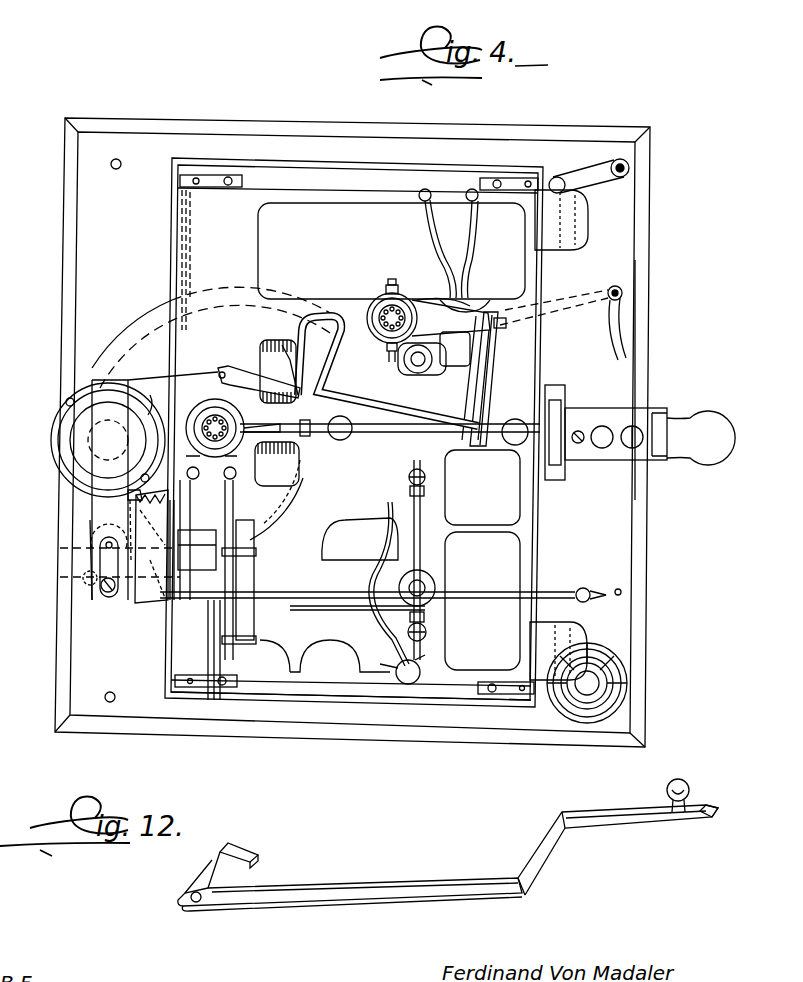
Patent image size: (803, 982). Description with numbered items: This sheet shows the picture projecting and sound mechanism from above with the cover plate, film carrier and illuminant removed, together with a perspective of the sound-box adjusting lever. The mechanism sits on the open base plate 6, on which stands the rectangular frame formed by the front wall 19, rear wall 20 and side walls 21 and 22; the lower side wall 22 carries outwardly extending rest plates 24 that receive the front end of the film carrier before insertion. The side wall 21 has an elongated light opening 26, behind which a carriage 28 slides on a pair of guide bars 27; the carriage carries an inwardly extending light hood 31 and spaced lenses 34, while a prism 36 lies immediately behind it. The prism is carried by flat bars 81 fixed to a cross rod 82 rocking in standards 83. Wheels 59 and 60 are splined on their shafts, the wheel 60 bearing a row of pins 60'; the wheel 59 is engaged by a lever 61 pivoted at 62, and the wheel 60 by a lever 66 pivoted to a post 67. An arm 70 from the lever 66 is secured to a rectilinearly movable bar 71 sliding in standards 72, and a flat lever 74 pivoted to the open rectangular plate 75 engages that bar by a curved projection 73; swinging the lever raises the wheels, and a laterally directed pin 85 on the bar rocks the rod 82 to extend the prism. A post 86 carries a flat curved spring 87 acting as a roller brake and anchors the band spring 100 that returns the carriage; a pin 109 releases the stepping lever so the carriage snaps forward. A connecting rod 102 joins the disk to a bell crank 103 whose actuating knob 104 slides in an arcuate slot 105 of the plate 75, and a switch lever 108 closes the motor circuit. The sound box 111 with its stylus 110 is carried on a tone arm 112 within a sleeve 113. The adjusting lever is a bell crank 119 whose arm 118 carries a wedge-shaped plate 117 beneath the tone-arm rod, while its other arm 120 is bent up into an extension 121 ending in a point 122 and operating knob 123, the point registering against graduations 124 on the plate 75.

In FIG. 4, the rear wall 20 is at (288, 157).
In FIG. 4, the side wall 21 is at (170, 252).
In FIG. 4, the front wall 19 is at (345, 705).
In FIG. 4, the base plate 6 is at (258, 232).
In FIG. 4, the switch lever 108 is at (588, 172).
In FIG. 4, the rest plates 24 is at (585, 225).
In FIG. 4, the open rectangular metallic plate 75 is at (640, 290).
In FIG. 4, the actuating knob 104 is at (625, 296).
In FIG. 4, the arcuate slot 105 is at (628, 330).
In FIG. 4, the lever 66 is at (478, 300).
In FIG. 4, the wheel 60 is at (397, 305).
In FIG. 4, the pins 60' is at (424, 310).
In FIG. 4, the post 67 is at (422, 369).
In FIG. 4, the arm 70 is at (494, 365).
In FIG. 4, the bell crank 103 is at (499, 385).
In FIG. 4, the vertically projecting pin 109 is at (513, 317).
In FIG. 4, the connecting rod 102 is at (290, 345).
In FIG. 4, the wheel 59 is at (210, 378).
In FIG. 4, the stylus 110 is at (150, 395).
In FIG. 4, the sound box 111 is at (52, 440).
In FIG. 4, the standards 72 is at (318, 440).
In FIG. 4, the lever 61 is at (333, 440).
In FIG. 4, the pivot 62 is at (277, 414).
In FIG. 4, the flat bars 81 is at (286, 620).
In FIG. 4, the rectilinearly movable bar 71 is at (512, 447).
In FIG. 4, the side wall 22 is at (547, 378).
In FIG. 4, the curved projection 73 is at (580, 430).
In FIG. 4, the flat lever 74 is at (640, 410).
In FIG. 4, the cross rod 82 is at (422, 549).
In FIG. 4, the standards 83 is at (426, 476).
In FIG. 4, the laterally directed pin 85 is at (482, 487).
In FIG. 4, the post 86 is at (406, 690).
In FIG. 4, the flat curved spring 87 is at (385, 543).
In FIG. 4, the band spring 100 is at (325, 654).
In FIG. 4, the graduations 124 is at (616, 582).
In FIG. 4, the light hood 31 is at (198, 540).
In FIG. 4, the prism 36 is at (256, 552).
In FIG. 4, the lenses 34 is at (258, 560).
In FIG. 4, the light opening 26 is at (160, 605).
In FIG. 4, the carriage 28 is at (172, 605).
In FIG. 4, the bell crank 119 is at (130, 595).
In FIG. 12, the bell crank 119 is at (240, 903).
In FIG. 4, the tone arm 112 is at (95, 548).
In FIG. 4, the arm 118 is at (82, 580).
In FIG. 12, the arm 118 is at (206, 870).
In FIG. 4, the sleeve 113 is at (125, 496).
In FIG. 4, the guide bars 27 is at (214, 702).
In FIG. 12, the arm 120 is at (410, 882).
In FIG. 12, the wedge-shaped plate 117 is at (250, 855).
In FIG. 12, the extension 121 is at (592, 813).
In FIG. 12, the operating knob 123 is at (680, 780).
In FIG. 12, the point 122 is at (714, 800).